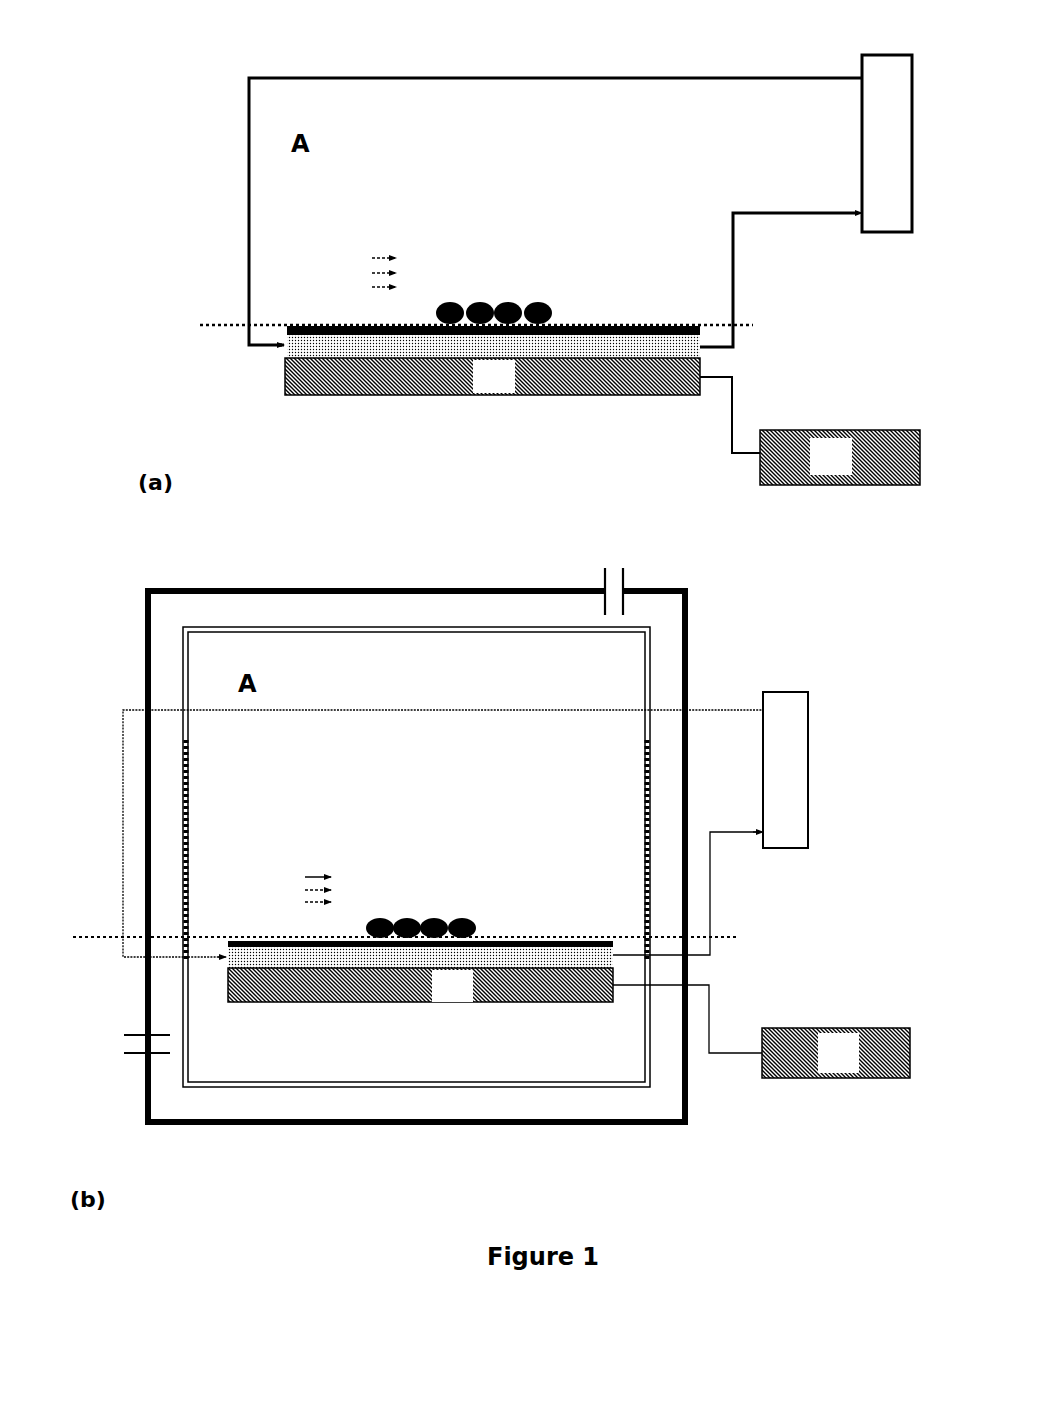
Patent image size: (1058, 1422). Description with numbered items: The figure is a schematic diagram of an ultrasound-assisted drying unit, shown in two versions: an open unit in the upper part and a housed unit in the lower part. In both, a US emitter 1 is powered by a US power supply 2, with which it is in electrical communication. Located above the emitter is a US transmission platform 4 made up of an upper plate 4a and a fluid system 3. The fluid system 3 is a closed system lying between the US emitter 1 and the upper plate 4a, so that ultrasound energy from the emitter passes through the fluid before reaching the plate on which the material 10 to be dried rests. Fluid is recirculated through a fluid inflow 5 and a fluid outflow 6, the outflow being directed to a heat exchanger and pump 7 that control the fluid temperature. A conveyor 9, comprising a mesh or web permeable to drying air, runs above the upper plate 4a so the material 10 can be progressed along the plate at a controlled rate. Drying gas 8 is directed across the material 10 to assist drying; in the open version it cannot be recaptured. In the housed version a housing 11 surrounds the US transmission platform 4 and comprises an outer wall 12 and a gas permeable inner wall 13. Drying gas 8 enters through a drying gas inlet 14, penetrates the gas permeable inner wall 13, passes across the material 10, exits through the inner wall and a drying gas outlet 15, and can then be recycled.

The US emitter 1 is at (464, 680).
The US power supply 2 is at (766, 727).
The fluid system 3 is at (464, 652).
The US transmission platform 4 is at (190, 325).
The upper plate 4a is at (287, 335).
The fluid inflow 5 is at (492, 496).
The fluid outflow 6 is at (737, 584).
The heat exchanger and pump 7 is at (837, 451).
The drying gas 8 is at (338, 581).
The conveyor 9 is at (429, 637).
The material 10 is at (459, 604).
The housing 11 is at (450, 612).
The outer wall 12 is at (223, 590).
The gas permeable inner wall 13 is at (190, 817).
The drying gas inlet 14 is at (128, 1045).
The drying gas outlet 15 is at (613, 576).